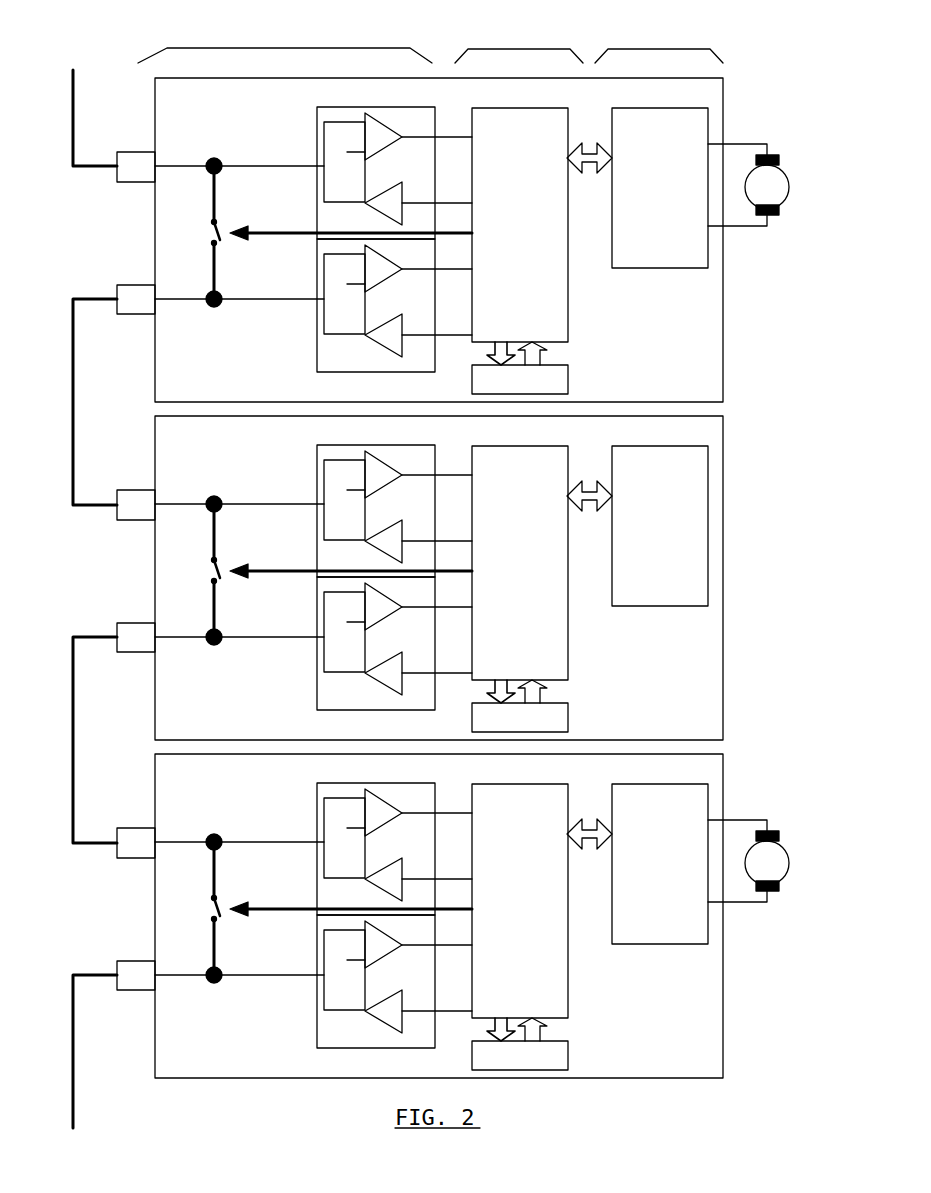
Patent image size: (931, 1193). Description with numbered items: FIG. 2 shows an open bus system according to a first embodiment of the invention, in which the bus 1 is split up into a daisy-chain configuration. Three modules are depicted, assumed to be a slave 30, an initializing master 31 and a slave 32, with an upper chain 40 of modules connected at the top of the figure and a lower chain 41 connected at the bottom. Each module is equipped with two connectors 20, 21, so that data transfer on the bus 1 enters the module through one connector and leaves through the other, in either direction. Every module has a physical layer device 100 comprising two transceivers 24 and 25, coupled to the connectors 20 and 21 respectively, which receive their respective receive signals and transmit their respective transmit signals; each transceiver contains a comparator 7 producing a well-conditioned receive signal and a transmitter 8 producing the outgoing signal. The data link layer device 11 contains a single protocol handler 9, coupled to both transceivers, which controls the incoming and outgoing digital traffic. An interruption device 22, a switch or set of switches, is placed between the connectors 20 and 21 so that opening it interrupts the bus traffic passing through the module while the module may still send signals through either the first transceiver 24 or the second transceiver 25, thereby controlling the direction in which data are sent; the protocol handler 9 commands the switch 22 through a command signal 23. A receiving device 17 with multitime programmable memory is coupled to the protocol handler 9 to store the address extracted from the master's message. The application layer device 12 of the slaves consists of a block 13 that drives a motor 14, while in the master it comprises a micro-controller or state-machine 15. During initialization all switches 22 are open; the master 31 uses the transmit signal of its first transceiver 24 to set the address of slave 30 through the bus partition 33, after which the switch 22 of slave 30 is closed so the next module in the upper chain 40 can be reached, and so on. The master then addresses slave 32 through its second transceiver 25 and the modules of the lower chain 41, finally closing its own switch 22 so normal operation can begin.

The bus 1 is at (63, 747).
The comparator 7 is at (378, 141).
The transmitter 8 is at (387, 208).
The protocol handler 9 is at (514, 234).
The data link layer device 11 is at (520, 55).
The application layer device 12 is at (660, 55).
The block to drive a motor 13 is at (650, 197).
The motor 14 is at (780, 190).
The micro-controller or state-machine 15 is at (650, 535).
The receiving device 17 is at (510, 389).
The first connector 20 is at (130, 165).
The second connector 21 is at (128, 298).
The interruption device 22 is at (222, 213).
The command signal 23 is at (453, 233).
The first transceiver 24 is at (327, 117).
The second transceiver 25 is at (327, 361).
The slave module 30 is at (715, 375).
The initializing master 31 is at (715, 713).
The slave module 32 is at (715, 1051).
The bus partition 33 is at (77, 405).
The upper chain 40 is at (78, 62).
The lower chain 41 is at (68, 1083).
The physical layer device 100 is at (283, 55).